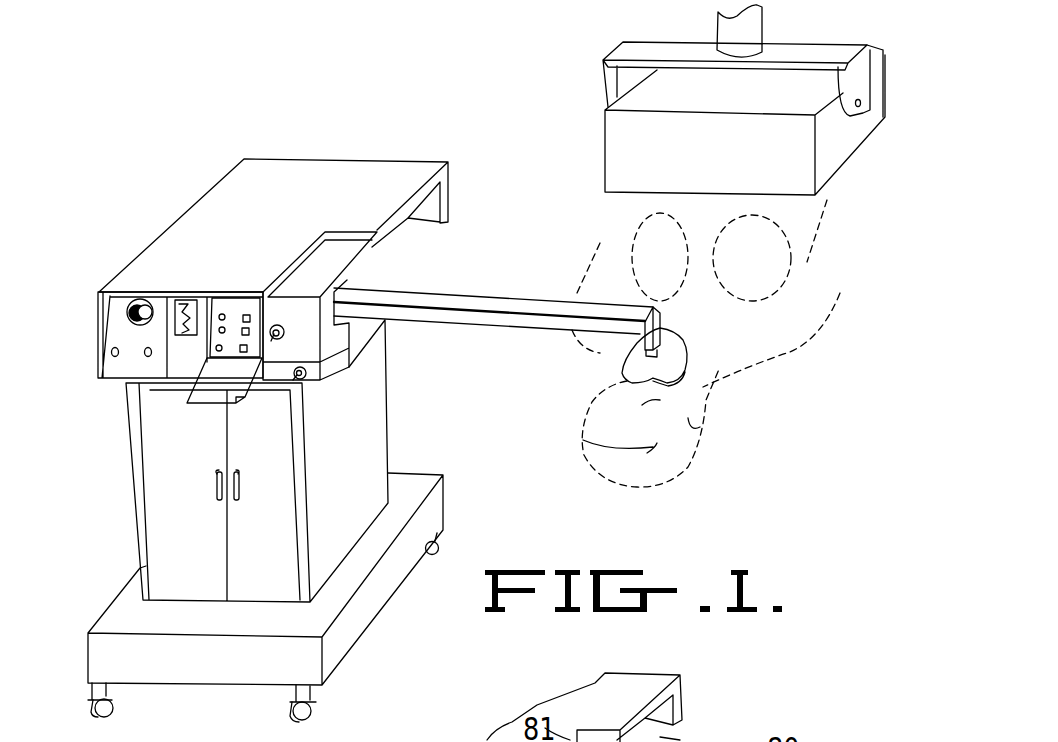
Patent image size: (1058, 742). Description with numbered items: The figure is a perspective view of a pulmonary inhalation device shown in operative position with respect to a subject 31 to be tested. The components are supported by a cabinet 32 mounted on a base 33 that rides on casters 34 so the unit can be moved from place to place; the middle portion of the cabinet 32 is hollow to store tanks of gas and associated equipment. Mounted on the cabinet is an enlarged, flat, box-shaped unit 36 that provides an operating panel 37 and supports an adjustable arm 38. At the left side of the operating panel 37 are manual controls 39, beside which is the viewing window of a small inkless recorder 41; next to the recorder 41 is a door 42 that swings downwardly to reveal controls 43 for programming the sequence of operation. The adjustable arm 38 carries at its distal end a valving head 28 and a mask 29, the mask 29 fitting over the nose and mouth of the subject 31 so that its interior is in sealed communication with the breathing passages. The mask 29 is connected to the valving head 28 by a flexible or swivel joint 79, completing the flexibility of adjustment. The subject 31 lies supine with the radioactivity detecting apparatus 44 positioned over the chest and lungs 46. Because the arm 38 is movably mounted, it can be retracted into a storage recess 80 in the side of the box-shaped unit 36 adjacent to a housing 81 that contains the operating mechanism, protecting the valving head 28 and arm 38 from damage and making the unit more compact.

The valving head 28 is at (676, 317).
The mask 29 is at (696, 349).
The subject 31 is at (703, 455).
The cabinet 32 is at (125, 482).
The base 33 is at (210, 677).
The casters 34 is at (433, 557).
The box-shaped unit 36 is at (273, 152).
The operating panel 37 is at (88, 339).
The adjustable arm 38 is at (492, 300).
The manual controls 39 is at (137, 282).
The inkless recorder 41 is at (186, 300).
The door 42 is at (247, 392).
The controls for programming 43 is at (241, 289).
The radioactivity detecting apparatus 44 is at (723, 172).
The lungs 46 is at (733, 223).
The flexible or swivel joint 79 is at (627, 363).
The storage recess 80 is at (395, 240).
The housing 81 is at (296, 275).